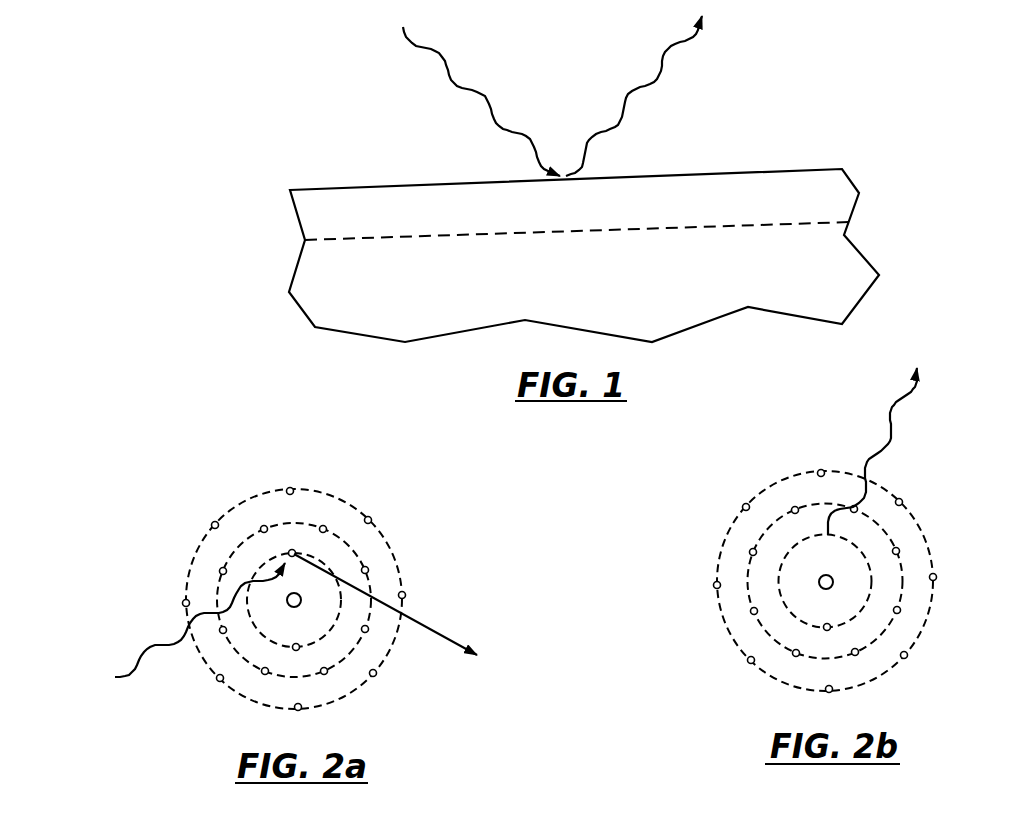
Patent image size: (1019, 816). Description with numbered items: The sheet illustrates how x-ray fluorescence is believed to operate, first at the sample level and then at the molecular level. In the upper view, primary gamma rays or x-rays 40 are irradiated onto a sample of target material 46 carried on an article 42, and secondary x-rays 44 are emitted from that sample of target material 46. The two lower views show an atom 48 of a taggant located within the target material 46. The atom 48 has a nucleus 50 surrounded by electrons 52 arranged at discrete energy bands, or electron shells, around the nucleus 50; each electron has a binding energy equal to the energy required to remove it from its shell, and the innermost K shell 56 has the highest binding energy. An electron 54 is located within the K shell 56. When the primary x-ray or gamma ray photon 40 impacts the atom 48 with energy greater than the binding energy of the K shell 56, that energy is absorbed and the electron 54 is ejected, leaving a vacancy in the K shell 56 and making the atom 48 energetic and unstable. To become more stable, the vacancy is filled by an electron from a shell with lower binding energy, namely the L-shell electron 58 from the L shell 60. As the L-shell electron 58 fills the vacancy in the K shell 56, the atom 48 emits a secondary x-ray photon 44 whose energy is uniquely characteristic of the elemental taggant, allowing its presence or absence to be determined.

In FIG. 1, the primary x-ray 40 is at (472, 95).
In FIG. 2a, the primary x-ray 40 is at (163, 640).
In FIG. 1, the article 42 is at (825, 272).
In FIG. 1, the secondary x-ray 44 is at (648, 88).
In FIG. 2b, the secondary x-ray 44 is at (881, 423).
In FIG. 1, the target material 46 is at (815, 205).
In FIG. 2a, the atom 48 is at (286, 600).
In FIG. 2b, the atom 48 is at (848, 530).
In FIG. 2a, the nucleus 50 is at (297, 606).
In FIG. 2b, the nucleus 50 is at (830, 588).
In FIG. 2a, the electrons 52 is at (288, 709).
In FIG. 2a, the electron 54 is at (292, 551).
In FIG. 2a, the K shell 56 is at (258, 632).
In FIG. 2b, the K shell 56 is at (793, 618).
In FIG. 2b, the L-shell electron 58 is at (817, 527).
In FIG. 2a, the L shell 60 is at (294, 600).
In FIG. 2b, the L shell 60 is at (903, 570).